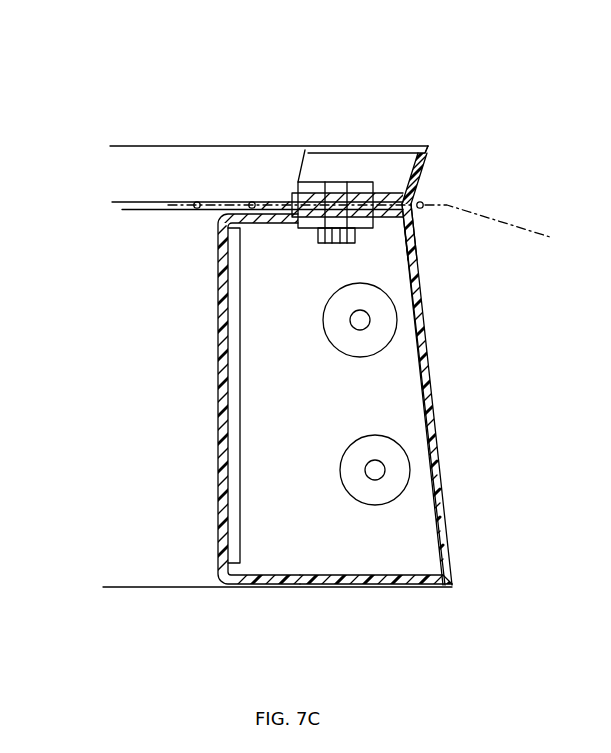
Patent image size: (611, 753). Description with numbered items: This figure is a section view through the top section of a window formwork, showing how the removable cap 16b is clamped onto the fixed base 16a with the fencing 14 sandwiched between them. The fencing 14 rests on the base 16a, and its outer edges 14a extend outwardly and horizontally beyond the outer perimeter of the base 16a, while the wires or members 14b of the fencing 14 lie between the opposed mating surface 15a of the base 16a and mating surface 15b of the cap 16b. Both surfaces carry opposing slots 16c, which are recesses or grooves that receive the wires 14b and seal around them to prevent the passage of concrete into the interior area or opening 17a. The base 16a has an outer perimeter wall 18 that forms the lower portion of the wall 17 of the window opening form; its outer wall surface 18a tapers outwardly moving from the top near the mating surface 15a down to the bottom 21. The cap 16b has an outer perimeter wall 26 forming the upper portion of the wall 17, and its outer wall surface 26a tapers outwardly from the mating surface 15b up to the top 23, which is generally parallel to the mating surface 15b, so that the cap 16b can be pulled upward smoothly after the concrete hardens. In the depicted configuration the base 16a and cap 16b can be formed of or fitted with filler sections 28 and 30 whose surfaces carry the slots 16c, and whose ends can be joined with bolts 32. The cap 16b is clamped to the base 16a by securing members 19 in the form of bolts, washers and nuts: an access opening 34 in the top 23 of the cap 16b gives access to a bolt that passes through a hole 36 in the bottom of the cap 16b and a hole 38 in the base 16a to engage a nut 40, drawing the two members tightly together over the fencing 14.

The fencing 14 is at (172, 213).
The outer edges of the fencing 14a is at (379, 225).
The wires or members of the fencing 14b is at (193, 210).
The mating surface of the base 15a is at (197, 209).
The mating surface of the cap 15b is at (198, 204).
The base 16a is at (440, 452).
The cap 16b is at (417, 178).
The slots 16c is at (417, 242).
The wall of the window opening form 17 is at (450, 565).
The interior area or opening 17a is at (152, 545).
The outer perimeter wall of the base 18 is at (447, 533).
The outer wall surface of the base 18a is at (445, 500).
The securing members 19 is at (325, 182).
The bottom of the base wall 21 is at (387, 587).
The top of the cap 23 is at (412, 146).
The outer perimeter wall of the cap 26 is at (373, 146).
The outer wall surface of the cap 26a is at (427, 162).
The filler section 28 is at (432, 390).
The filler section 30 is at (128, 145).
The bolts 32 is at (370, 318).
The access opening 34 is at (363, 147).
The hole in the bottom of the cap 36 is at (333, 182).
The hole in the base 38 is at (323, 222).
The nut 40 is at (330, 232).